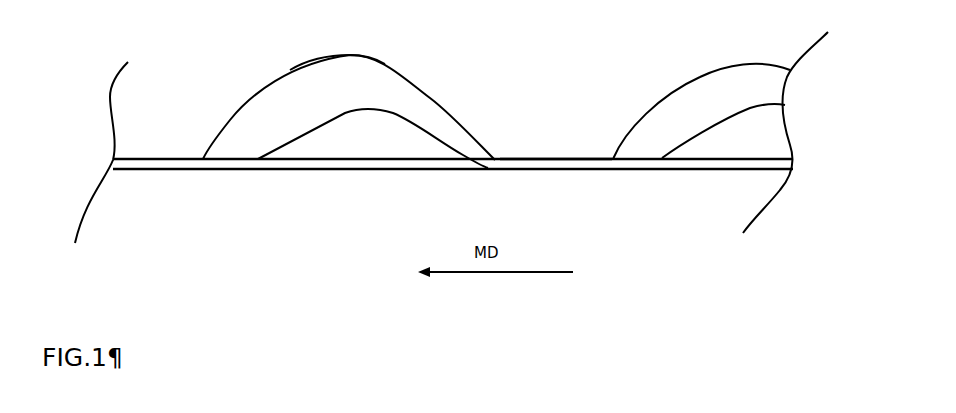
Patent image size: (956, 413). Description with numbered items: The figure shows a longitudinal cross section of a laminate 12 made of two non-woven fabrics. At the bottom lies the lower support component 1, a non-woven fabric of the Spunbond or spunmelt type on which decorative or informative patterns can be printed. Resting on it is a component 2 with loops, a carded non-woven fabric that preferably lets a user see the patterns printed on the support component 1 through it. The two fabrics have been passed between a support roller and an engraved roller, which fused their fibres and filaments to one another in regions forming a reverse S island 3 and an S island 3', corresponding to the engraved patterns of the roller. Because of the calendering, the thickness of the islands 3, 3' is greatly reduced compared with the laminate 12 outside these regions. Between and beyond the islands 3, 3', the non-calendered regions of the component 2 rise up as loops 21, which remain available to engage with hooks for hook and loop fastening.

The lower support component 1 is at (265, 171).
The component with loops 2 is at (262, 108).
The reverse S island 3 is at (451, 137).
The S island 3' is at (556, 120).
The laminate 12 is at (462, 118).
The loops 21 is at (315, 75).